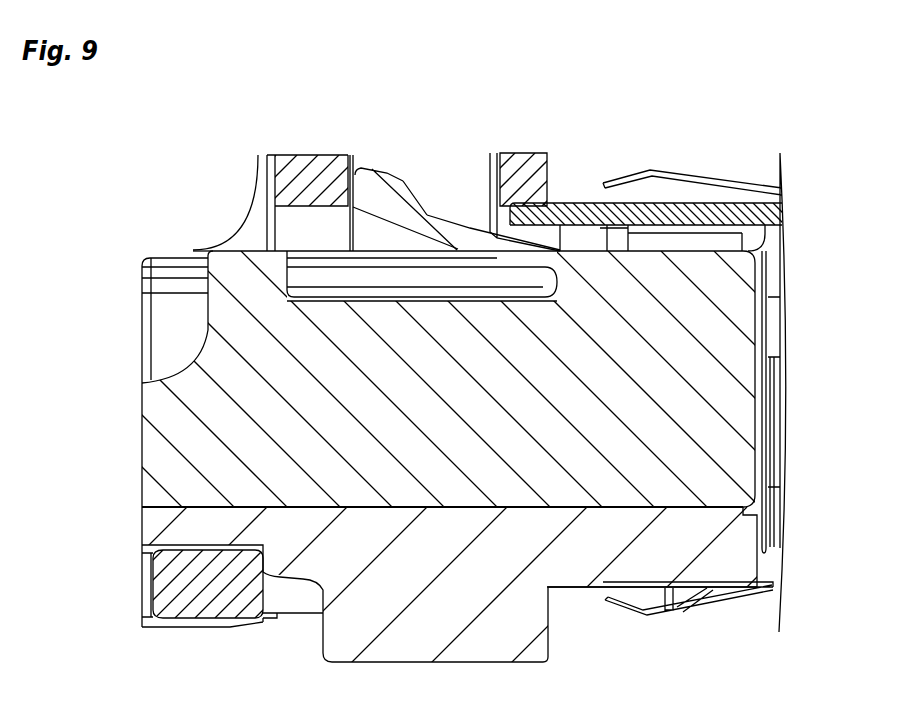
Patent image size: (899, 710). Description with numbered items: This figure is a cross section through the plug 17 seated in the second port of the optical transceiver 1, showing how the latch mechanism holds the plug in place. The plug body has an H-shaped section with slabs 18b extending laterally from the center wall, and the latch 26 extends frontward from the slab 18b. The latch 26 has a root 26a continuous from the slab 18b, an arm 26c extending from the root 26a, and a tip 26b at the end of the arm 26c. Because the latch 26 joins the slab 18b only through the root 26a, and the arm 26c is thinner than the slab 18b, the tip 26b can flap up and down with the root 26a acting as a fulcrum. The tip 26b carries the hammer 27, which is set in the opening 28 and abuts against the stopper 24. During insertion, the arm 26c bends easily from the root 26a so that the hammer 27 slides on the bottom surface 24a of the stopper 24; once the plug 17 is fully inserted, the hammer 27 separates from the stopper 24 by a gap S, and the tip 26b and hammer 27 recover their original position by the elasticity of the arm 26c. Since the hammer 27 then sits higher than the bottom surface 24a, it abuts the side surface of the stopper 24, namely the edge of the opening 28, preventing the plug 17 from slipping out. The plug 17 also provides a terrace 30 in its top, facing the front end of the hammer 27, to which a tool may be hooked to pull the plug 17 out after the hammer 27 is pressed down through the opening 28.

The optical transceiver 1 is at (797, 78).
The plug 17 is at (176, 362).
The slab 18b is at (767, 247).
The stopper 24 is at (295, 162).
The bottom surface of the stopper 24a is at (290, 208).
The latch 26 is at (414, 190).
The root 26a is at (562, 250).
The tip 26b is at (427, 215).
The arm 26c is at (490, 153).
The hammer 27 is at (371, 168).
The opening 28 is at (352, 155).
The terrace 30 is at (227, 263).
The gap S is at (378, 237).